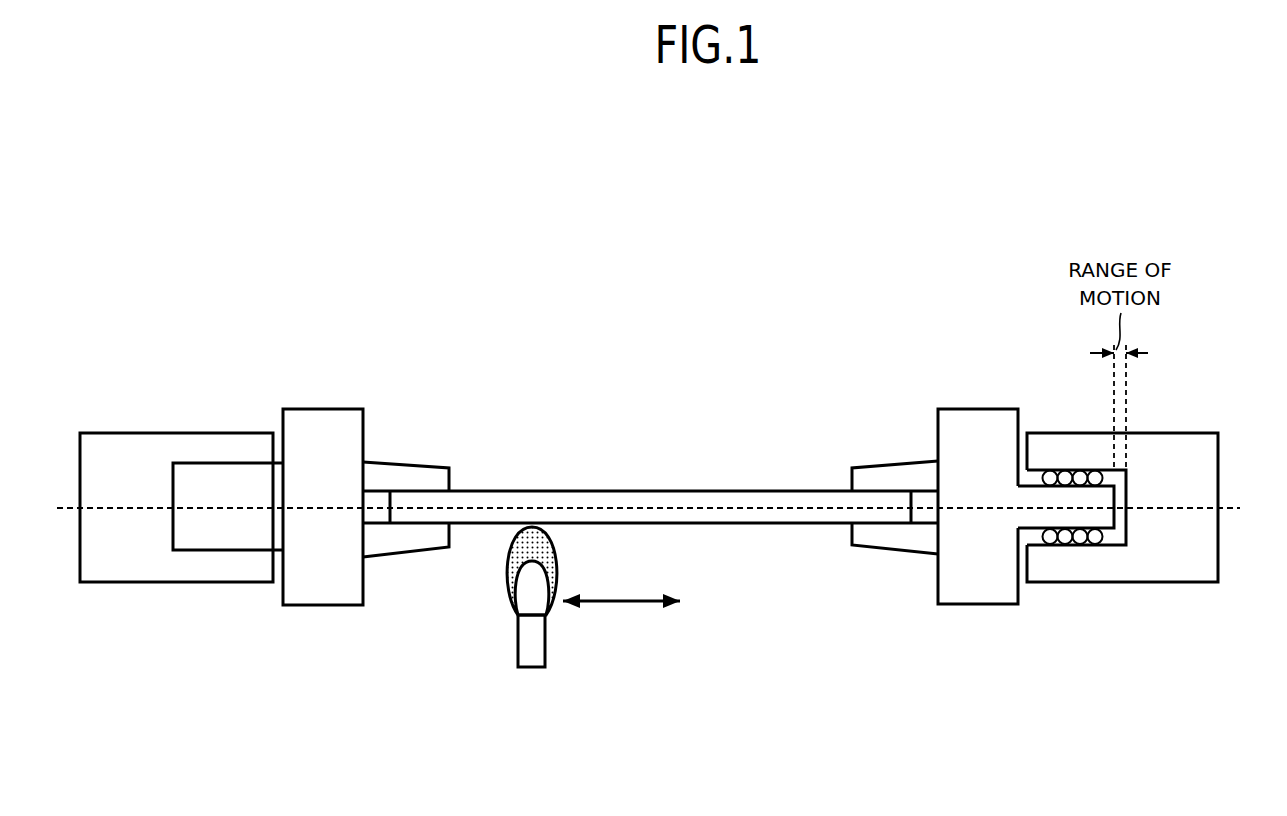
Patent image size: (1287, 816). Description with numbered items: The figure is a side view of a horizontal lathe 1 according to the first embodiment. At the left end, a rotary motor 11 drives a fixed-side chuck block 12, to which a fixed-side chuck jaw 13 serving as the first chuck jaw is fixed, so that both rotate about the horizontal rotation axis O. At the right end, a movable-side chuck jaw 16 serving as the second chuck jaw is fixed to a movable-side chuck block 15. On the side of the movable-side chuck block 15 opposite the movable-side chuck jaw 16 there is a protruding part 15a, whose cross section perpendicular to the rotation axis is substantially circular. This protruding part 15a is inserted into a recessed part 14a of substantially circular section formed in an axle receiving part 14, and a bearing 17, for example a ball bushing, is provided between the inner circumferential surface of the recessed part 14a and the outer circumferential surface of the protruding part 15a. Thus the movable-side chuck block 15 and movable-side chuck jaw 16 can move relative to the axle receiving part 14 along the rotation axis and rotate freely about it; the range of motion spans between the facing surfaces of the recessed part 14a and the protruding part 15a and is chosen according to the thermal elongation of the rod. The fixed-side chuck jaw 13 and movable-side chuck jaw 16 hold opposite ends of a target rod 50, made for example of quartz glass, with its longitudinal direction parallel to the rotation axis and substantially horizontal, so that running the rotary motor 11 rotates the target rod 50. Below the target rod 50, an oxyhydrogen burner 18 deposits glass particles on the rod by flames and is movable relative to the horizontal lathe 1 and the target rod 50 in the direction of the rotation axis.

The horizontal lathe 1 is at (647, 354).
The rotary motor 11 is at (127, 448).
The fixed-side chuck block 12 is at (323, 425).
The fixed-side chuck jaw 13 is at (397, 478).
The target rod 50 is at (699, 480).
The movable-side chuck jaw 16 is at (904, 480).
The movable-side chuck block 15 is at (977, 424).
The protruding part 15a is at (1037, 517).
The axle receiving part 14 is at (1200, 458).
The recessed part 14a is at (1027, 482).
The bearing 17 is at (1080, 477).
The oxyhydrogen burner 18 is at (527, 652).